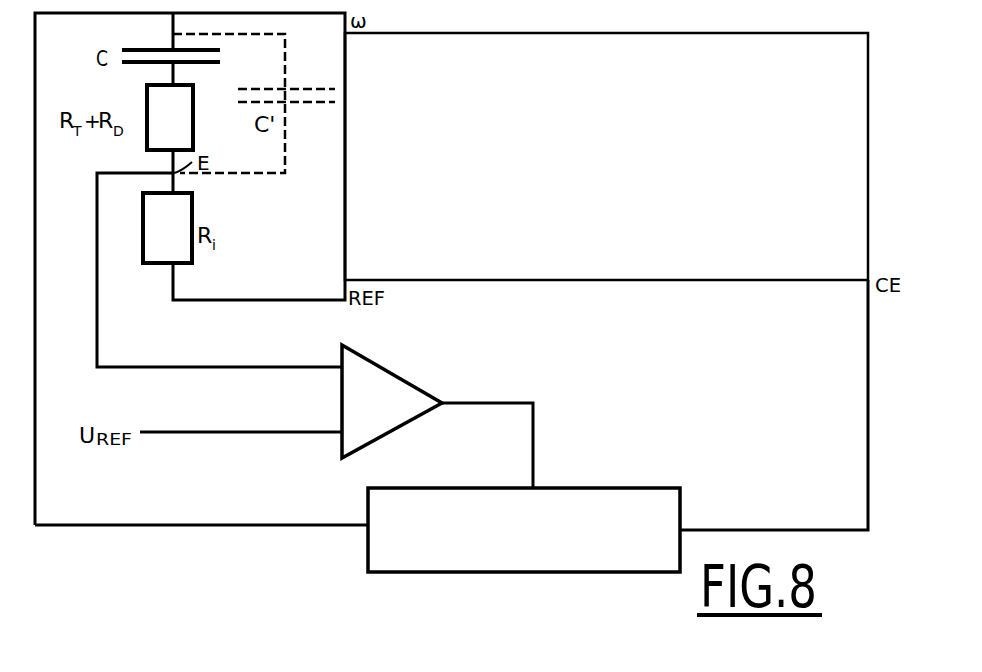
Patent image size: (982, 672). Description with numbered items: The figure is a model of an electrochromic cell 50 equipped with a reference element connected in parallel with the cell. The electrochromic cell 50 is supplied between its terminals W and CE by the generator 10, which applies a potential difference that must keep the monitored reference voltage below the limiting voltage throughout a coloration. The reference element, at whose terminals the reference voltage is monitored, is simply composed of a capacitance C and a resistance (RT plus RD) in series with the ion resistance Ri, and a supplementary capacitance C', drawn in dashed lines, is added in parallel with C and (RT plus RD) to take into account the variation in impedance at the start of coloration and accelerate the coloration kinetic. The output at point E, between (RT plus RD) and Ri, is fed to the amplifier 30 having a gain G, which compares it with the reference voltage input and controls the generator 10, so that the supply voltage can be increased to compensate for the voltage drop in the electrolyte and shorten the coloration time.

The electrochromic cell 50 is at (748, 48).
The amplifier 30 is at (395, 379).
The generator 10 is at (612, 566).